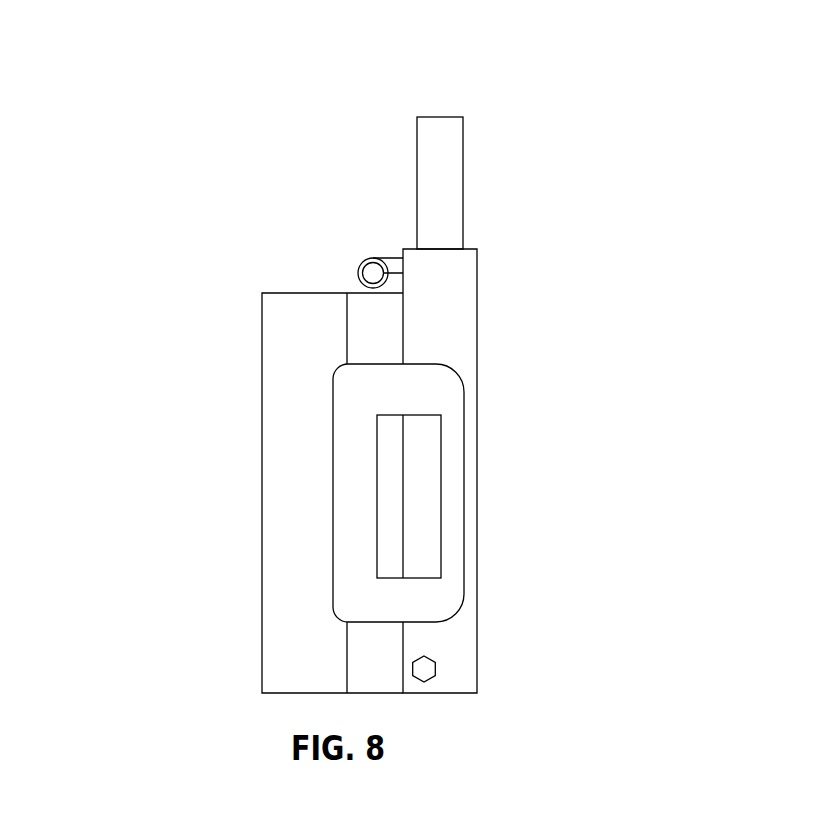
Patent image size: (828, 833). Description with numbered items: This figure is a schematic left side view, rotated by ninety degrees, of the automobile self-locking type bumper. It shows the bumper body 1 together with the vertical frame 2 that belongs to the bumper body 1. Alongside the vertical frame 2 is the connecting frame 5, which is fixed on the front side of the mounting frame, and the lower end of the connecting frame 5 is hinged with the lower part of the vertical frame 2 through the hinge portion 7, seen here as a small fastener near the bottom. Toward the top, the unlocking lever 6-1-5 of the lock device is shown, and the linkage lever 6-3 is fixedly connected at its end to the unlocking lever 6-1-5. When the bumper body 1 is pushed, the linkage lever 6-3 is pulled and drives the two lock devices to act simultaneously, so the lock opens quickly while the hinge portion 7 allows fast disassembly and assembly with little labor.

The bumper body 1 is at (453, 518).
The vertical frame 2 is at (294, 416).
The connecting frame 5 is at (358, 665).
The hinge portion 7 is at (424, 669).
The linkage lever 6-3 is at (372, 272).
The unlocking lever 6-1-5 is at (392, 265).